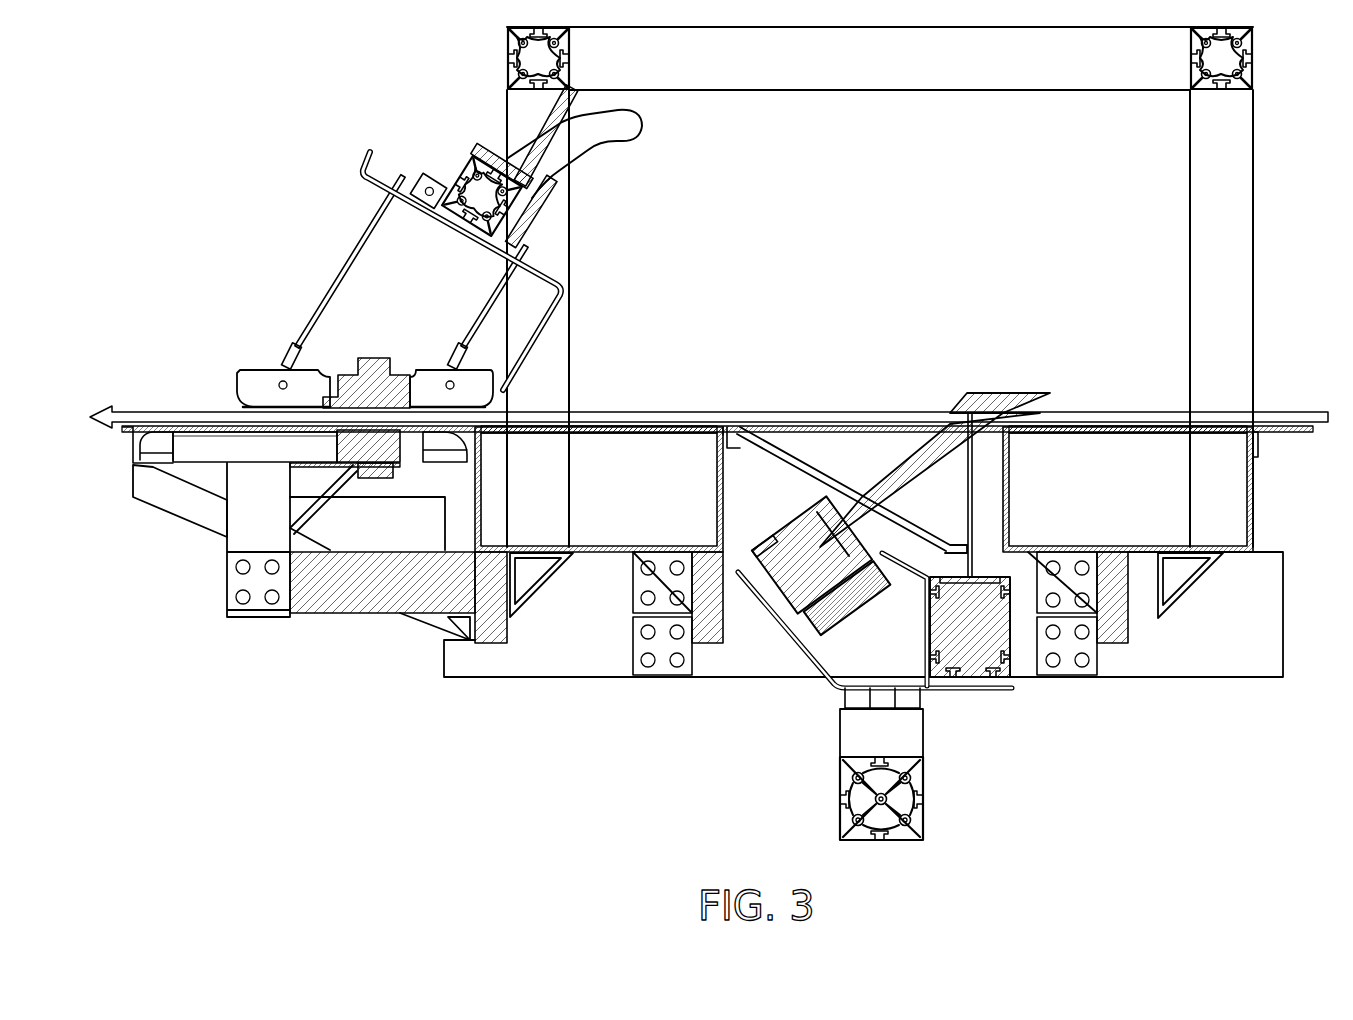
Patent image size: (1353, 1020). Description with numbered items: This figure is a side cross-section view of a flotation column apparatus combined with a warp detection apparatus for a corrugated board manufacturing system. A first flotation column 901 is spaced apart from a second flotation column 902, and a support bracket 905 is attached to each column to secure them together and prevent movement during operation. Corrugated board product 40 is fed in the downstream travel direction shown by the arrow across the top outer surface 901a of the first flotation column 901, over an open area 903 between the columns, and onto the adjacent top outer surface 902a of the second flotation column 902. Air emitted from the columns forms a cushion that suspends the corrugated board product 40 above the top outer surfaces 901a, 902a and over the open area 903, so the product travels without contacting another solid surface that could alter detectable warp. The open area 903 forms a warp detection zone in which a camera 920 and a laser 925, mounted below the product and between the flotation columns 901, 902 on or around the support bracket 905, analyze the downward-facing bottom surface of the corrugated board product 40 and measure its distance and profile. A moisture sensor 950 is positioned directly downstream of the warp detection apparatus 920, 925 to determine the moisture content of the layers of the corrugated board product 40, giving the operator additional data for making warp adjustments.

The corrugated board product 40 is at (1313, 412).
The first flotation column 901 is at (1053, 445).
The top outer surface of flotation column 901 901a is at (1137, 422).
The second flotation column 902 is at (588, 445).
The top outer surface of flotation column 902 902a is at (672, 425).
The open area 903 is at (878, 432).
The support bracket 905 is at (835, 477).
The camera 920 is at (790, 537).
The laser 925 is at (967, 653).
The moisture sensor 950 is at (430, 182).